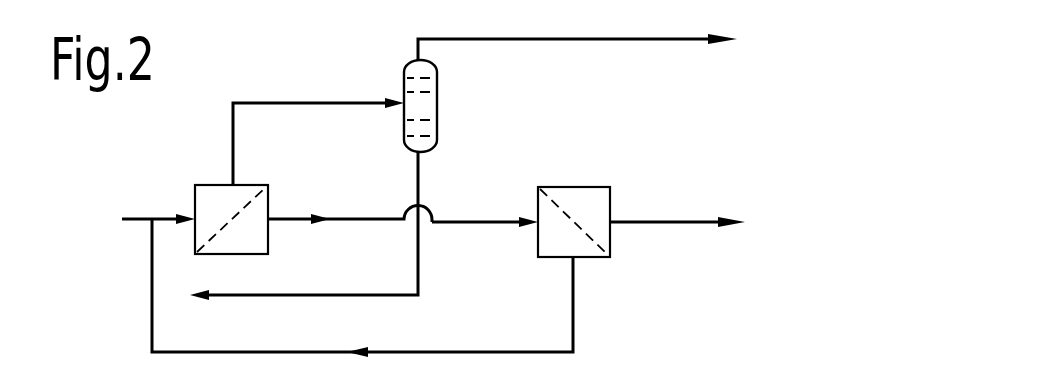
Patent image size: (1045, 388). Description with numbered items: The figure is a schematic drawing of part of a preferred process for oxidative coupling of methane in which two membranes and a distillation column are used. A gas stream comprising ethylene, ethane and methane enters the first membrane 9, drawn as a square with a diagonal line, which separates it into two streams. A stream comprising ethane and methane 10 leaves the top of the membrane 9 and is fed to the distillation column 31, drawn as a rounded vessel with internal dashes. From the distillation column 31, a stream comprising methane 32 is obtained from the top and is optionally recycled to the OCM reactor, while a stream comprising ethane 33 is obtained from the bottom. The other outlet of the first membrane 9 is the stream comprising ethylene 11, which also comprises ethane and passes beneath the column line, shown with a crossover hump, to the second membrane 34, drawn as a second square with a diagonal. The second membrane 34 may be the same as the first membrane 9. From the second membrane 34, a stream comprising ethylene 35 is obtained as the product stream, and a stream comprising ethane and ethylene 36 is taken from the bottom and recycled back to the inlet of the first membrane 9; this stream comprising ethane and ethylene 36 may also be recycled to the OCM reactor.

The membrane 9 is at (232, 203).
The stream comprising ethane and methane 10 is at (318, 122).
The stream comprising ethylene 11 is at (485, 205).
The distillation column 31 is at (437, 106).
The stream comprising methane 32 is at (577, 31).
The stream comprising ethane 33 is at (324, 226).
The second membrane 34 is at (574, 204).
The stream comprising ethylene 35 is at (677, 207).
The stream comprising ethane and ethylene 36 is at (383, 289).